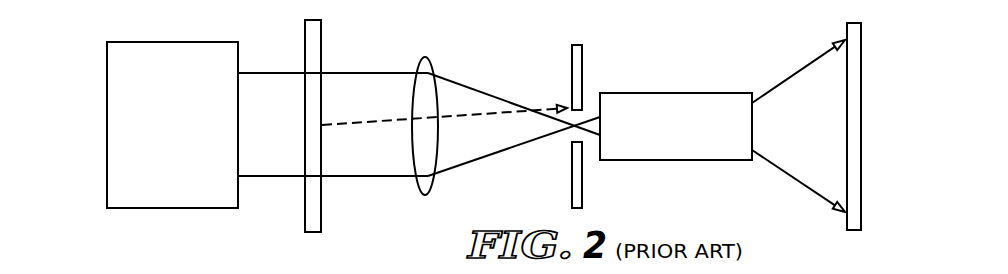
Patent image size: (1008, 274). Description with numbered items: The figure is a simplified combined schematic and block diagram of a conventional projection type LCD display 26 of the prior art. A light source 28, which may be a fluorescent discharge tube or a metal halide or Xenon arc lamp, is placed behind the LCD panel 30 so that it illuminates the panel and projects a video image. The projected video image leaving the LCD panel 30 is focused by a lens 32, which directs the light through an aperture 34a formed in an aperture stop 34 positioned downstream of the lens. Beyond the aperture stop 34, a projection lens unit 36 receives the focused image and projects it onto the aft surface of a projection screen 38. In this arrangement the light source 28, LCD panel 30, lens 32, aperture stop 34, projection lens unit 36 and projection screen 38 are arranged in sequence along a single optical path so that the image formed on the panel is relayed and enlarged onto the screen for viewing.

The conventional projection type LCD display 26 is at (480, 57).
The light source 28 is at (107, 110).
The LCD panel 30 is at (325, 212).
The lens 32 is at (432, 190).
The aperture stop 34 is at (581, 200).
The aperture 34a is at (583, 118).
The projection lens unit 36 is at (672, 161).
The projection screen 38 is at (861, 92).